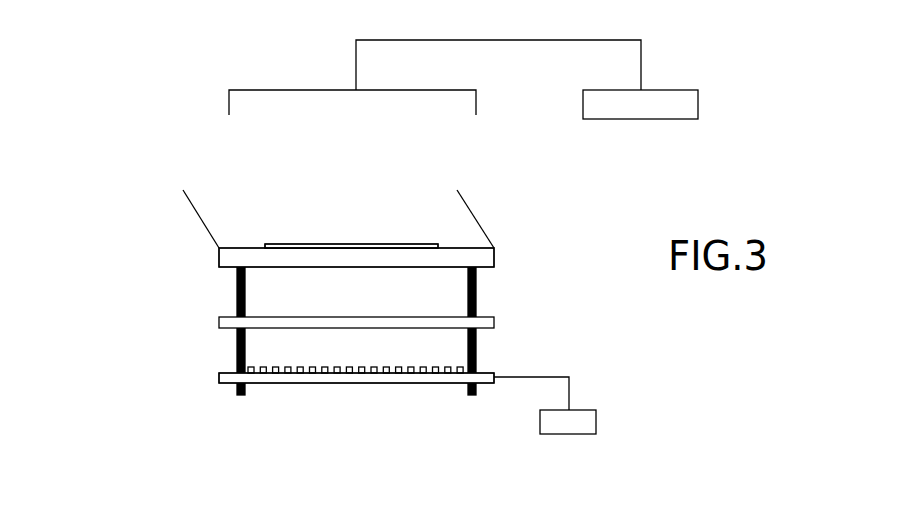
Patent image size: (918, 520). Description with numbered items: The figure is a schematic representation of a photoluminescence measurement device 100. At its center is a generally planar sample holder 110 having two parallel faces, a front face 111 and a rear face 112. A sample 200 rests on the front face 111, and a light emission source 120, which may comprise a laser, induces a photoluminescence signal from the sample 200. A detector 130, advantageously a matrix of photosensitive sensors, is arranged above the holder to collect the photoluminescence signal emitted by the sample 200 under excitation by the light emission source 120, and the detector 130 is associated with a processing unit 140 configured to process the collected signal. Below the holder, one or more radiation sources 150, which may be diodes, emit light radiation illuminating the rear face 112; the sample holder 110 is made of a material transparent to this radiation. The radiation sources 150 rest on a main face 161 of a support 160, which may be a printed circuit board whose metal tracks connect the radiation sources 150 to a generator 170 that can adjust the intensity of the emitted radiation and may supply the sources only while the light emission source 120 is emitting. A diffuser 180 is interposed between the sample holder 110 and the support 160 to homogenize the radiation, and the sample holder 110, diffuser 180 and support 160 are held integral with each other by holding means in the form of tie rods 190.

The photoluminescence measurement device 100 is at (125, 65).
The sample holder 110 is at (219, 258).
The front face 111 is at (355, 246).
The rear face 112 is at (357, 268).
The light emission source 120 is at (190, 200).
The detector 130 is at (292, 90).
The processing unit 140 is at (698, 105).
The radiation sources 150 is at (251, 374).
The support 160 is at (219, 377).
The main face 161 is at (237, 372).
The generator 170 is at (596, 422).
The diffuser 180 is at (494, 322).
The tie rods 190 is at (237, 305).
The sample 200 is at (370, 244).